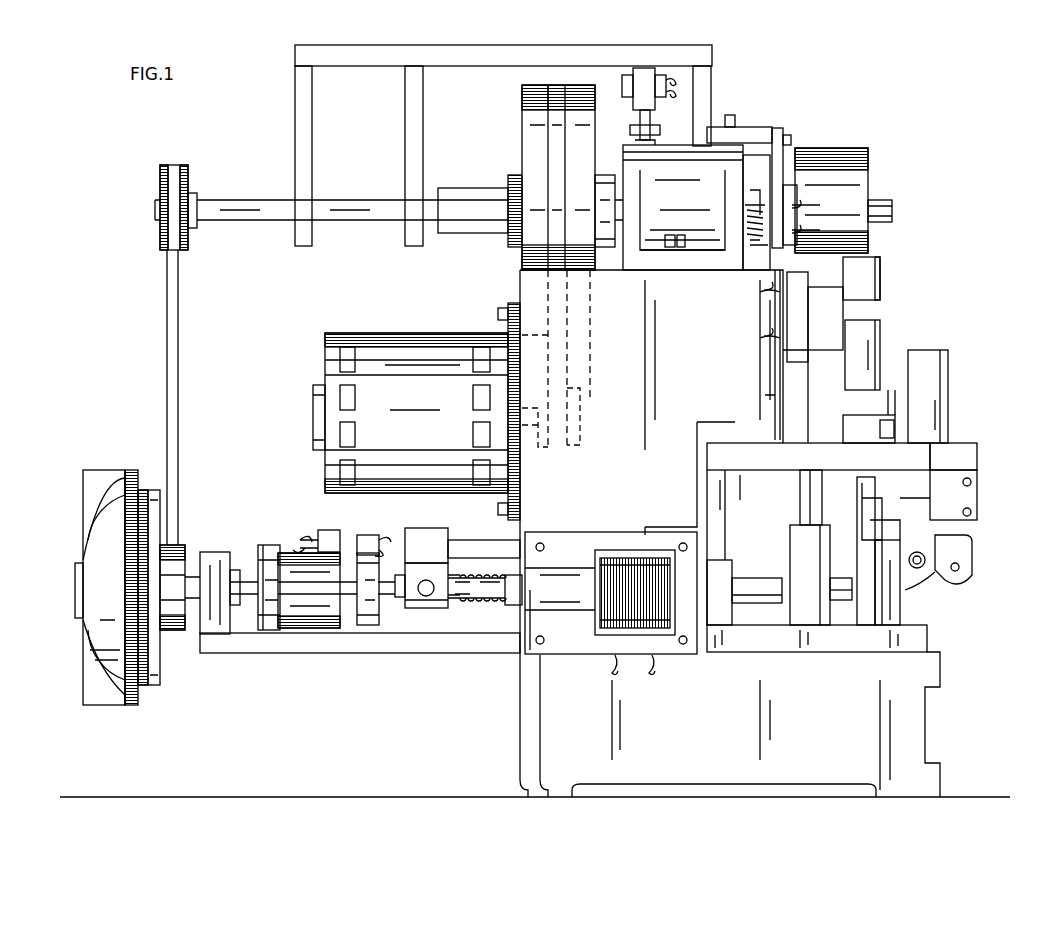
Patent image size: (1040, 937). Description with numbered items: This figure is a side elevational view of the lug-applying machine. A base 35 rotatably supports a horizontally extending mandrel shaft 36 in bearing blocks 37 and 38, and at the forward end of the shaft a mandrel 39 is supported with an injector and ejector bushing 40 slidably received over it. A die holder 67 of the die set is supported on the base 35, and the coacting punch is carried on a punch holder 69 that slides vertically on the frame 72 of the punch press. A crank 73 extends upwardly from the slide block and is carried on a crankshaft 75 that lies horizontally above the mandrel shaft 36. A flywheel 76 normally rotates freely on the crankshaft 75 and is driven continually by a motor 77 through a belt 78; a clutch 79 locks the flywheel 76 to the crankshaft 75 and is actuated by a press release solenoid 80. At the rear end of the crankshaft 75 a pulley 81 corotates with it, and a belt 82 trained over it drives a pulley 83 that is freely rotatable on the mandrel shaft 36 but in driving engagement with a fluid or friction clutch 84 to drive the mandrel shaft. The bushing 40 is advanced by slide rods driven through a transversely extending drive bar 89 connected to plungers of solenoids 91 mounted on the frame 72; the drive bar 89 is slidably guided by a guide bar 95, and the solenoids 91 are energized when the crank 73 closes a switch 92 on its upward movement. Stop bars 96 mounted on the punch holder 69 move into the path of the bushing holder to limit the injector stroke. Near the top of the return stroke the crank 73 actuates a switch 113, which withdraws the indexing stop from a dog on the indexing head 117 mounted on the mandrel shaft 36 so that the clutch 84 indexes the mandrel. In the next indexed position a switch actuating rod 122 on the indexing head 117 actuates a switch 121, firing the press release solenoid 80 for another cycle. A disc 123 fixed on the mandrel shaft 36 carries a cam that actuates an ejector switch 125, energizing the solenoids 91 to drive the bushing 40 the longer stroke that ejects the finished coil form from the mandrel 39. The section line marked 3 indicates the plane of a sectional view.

The section line 3- 3 is at (290, 528).
The base 35 is at (935, 725).
The mandrel shaft 36 is at (752, 603).
The bearing block 37 is at (220, 552).
The bearing block 38 is at (725, 560).
The mandrel 39 is at (841, 600).
The injector and ejector bushing 40 is at (840, 572).
The die holder 67 is at (906, 606).
The punch holder 69 is at (825, 455).
The frame 72 is at (778, 395).
The crank 73 is at (868, 245).
The crankshaft 75 is at (360, 200).
The flywheel 76 is at (580, 95).
The motor 77 is at (420, 340).
The belt 78 is at (555, 135).
The clutch 79 is at (624, 152).
The press release solenoid 80 is at (655, 80).
The pulley 81 is at (190, 170).
The belt 82 is at (178, 340).
The pulley 83 is at (185, 622).
The fluid or friction clutch 84 is at (148, 690).
The drive bar 89 is at (427, 542).
The solenoids 91 is at (573, 630).
The switch 92 is at (800, 312).
The guide bar 95 is at (485, 545).
The stop bars 96 is at (885, 500).
The switch 113 is at (800, 188).
The indexing head 117 is at (273, 542).
The switch 121 is at (340, 540).
The switch actuating rod 122 is at (325, 630).
The disc 123 is at (368, 627).
The ejector switch 125 is at (372, 540).